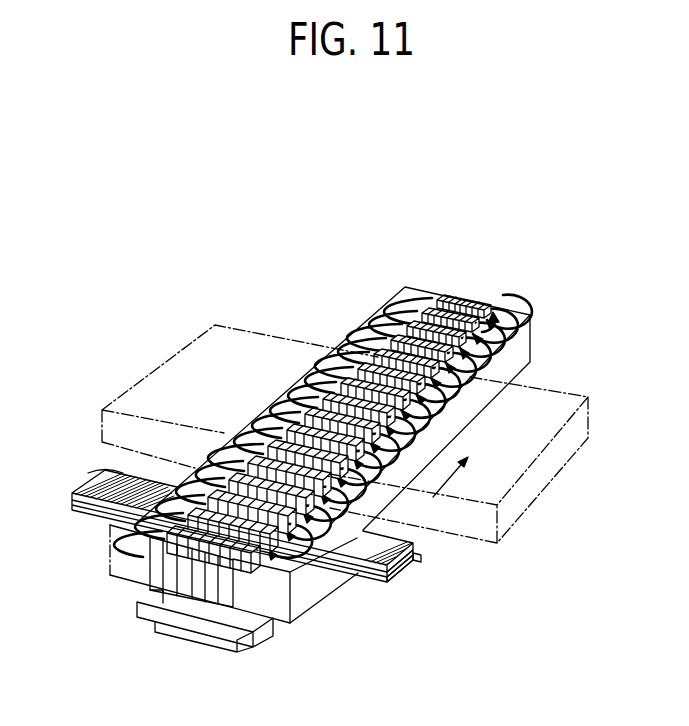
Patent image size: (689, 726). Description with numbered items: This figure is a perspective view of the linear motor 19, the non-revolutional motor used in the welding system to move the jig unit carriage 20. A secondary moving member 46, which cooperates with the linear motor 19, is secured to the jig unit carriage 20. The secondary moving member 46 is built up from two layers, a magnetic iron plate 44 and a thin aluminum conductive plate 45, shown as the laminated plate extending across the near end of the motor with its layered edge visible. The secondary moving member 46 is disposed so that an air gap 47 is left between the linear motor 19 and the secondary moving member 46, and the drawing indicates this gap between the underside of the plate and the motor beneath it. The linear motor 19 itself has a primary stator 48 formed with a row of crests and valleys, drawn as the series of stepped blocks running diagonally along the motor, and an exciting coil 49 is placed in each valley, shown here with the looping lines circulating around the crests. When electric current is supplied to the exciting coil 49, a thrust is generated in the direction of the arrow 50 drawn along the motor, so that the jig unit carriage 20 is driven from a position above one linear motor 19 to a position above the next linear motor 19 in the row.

The linear motor 19 is at (557, 388).
The jig unit carriage 20 is at (84, 478).
The magnetic iron plate 44 is at (419, 562).
The thin aluminum conductive plate 45 is at (403, 578).
The secondary moving member 46 is at (384, 588).
The air gap 47 is at (347, 572).
The primary stator 48 is at (104, 577).
The exciting coil 49 is at (415, 302).
The arrow 50 is at (432, 500).